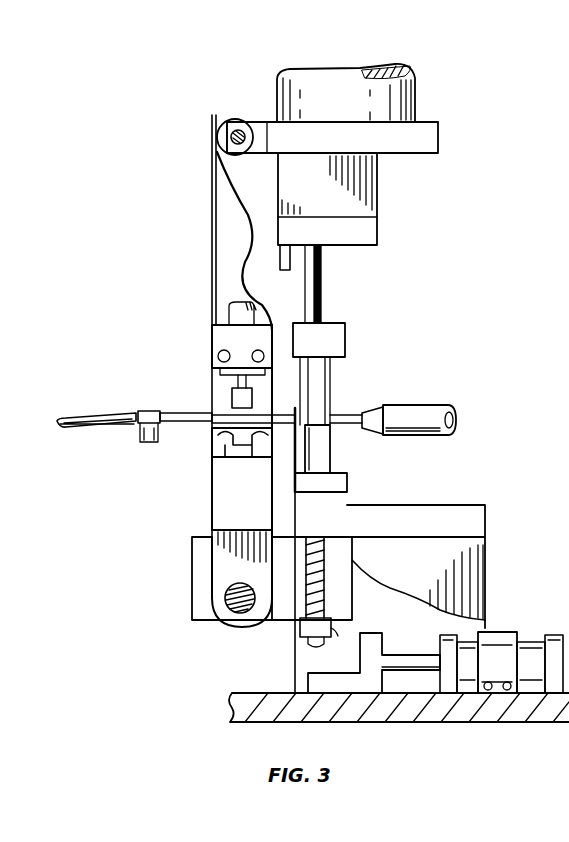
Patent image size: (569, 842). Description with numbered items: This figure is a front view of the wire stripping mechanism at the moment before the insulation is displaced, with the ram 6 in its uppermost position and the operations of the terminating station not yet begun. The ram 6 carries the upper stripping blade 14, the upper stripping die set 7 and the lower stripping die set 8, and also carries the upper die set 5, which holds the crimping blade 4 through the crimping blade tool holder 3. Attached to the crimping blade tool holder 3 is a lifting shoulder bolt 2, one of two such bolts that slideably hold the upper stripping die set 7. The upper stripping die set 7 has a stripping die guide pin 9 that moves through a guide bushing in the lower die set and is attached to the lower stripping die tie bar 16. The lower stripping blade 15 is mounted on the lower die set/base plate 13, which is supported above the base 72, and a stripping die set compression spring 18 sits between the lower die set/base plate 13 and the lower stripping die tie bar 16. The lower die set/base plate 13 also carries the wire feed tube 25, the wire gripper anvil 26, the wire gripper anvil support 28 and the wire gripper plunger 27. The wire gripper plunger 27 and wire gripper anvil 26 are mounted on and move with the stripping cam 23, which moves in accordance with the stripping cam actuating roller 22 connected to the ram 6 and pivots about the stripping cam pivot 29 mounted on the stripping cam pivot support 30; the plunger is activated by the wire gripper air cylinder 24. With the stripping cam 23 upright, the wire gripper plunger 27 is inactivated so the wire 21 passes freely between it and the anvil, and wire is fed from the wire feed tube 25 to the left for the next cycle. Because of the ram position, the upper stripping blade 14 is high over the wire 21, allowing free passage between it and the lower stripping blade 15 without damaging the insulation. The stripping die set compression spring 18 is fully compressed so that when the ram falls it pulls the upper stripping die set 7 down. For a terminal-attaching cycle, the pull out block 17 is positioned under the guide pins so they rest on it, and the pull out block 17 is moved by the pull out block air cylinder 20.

The lifting shoulder bolt 2 is at (322, 280).
The crimping blade tool holder 3 is at (378, 188).
The crimping blade 4 is at (278, 260).
The upper die set 5 is at (439, 140).
The ram 6 is at (417, 80).
The upper stripping die set 7 is at (346, 335).
The lower stripping die set 8 is at (349, 482).
The stripping die guide pin 9 is at (340, 603).
The lower die set/base plate 13 is at (430, 510).
The upper stripping blade 14 is at (312, 372).
The lower stripping blade 15 is at (290, 450).
The lower stripping die tie bar 16 is at (332, 636).
The pull out block 17 is at (312, 675).
The stripping die set compression spring 18 is at (306, 560).
The pull out block air cylinder 20 is at (522, 640).
The wire 21 is at (82, 413).
The stripping cam actuating roller 22 is at (237, 118).
The stripping cam 23 is at (210, 200).
The wire gripper air cylinder 24 is at (213, 332).
The wire feed tube 25 is at (420, 405).
The wire gripper anvil 26 is at (218, 445).
The wire gripper plunger 27 is at (230, 400).
The wire gripper anvil support 28 is at (214, 495).
The stripping cam pivot 29 is at (236, 612).
The stripping cam pivot support 30 is at (193, 568).
The base 72 is at (258, 690).